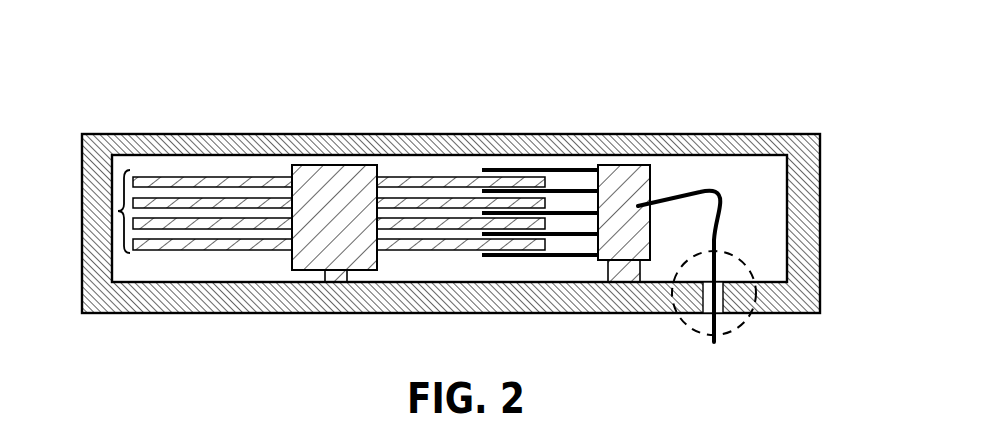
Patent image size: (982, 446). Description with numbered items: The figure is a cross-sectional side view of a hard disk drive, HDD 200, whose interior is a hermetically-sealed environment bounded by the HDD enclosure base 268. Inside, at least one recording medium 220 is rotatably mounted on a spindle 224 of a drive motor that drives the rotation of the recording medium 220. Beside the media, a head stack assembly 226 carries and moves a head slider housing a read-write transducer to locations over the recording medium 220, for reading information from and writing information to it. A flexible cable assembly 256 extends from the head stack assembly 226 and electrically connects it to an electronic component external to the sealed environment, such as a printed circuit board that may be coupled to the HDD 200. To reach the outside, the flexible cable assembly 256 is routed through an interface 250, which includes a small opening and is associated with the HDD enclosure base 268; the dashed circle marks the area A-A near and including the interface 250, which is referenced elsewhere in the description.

The hard disk drive 200 is at (230, 66).
The recording medium 220 is at (120, 212).
The spindle 224 is at (338, 178).
The head stack assembly 226 is at (625, 178).
The interface 250 is at (722, 298).
The flexible cable assembly 256 is at (717, 222).
The HDD enclosure base 268 is at (807, 295).